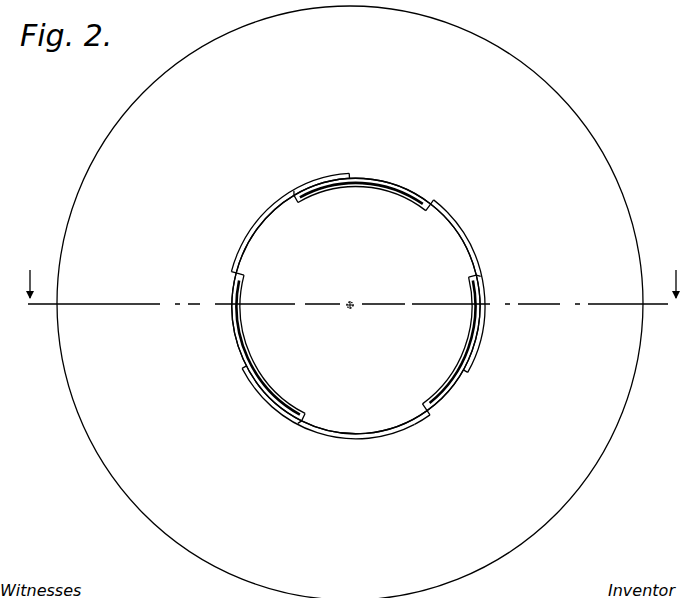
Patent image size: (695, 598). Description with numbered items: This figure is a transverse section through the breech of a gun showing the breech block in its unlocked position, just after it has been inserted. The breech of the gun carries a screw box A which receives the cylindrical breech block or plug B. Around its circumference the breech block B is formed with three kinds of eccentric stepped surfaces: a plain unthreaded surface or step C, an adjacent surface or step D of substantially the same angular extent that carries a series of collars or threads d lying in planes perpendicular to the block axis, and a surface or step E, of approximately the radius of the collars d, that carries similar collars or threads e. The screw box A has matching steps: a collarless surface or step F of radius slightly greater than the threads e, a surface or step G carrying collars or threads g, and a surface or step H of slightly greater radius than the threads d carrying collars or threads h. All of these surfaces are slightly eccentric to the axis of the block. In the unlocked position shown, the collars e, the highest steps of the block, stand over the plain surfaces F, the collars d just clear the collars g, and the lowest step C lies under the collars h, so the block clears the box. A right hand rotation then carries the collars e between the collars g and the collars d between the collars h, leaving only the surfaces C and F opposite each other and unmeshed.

The screw box A is at (350, 302).
The breech block B is at (372, 291).
The unthreaded surface or step C is at (417, 396).
The surface or step D is at (343, 209).
The surface or step E is at (242, 239).
The surface or step F is at (235, 228).
The surface or step G is at (325, 180).
The collars or threads g is at (333, 176).
The surface or step H is at (385, 200).
The collars or threads h is at (416, 197).
The collars or threads d is at (300, 186).
The collars or threads e is at (255, 216).